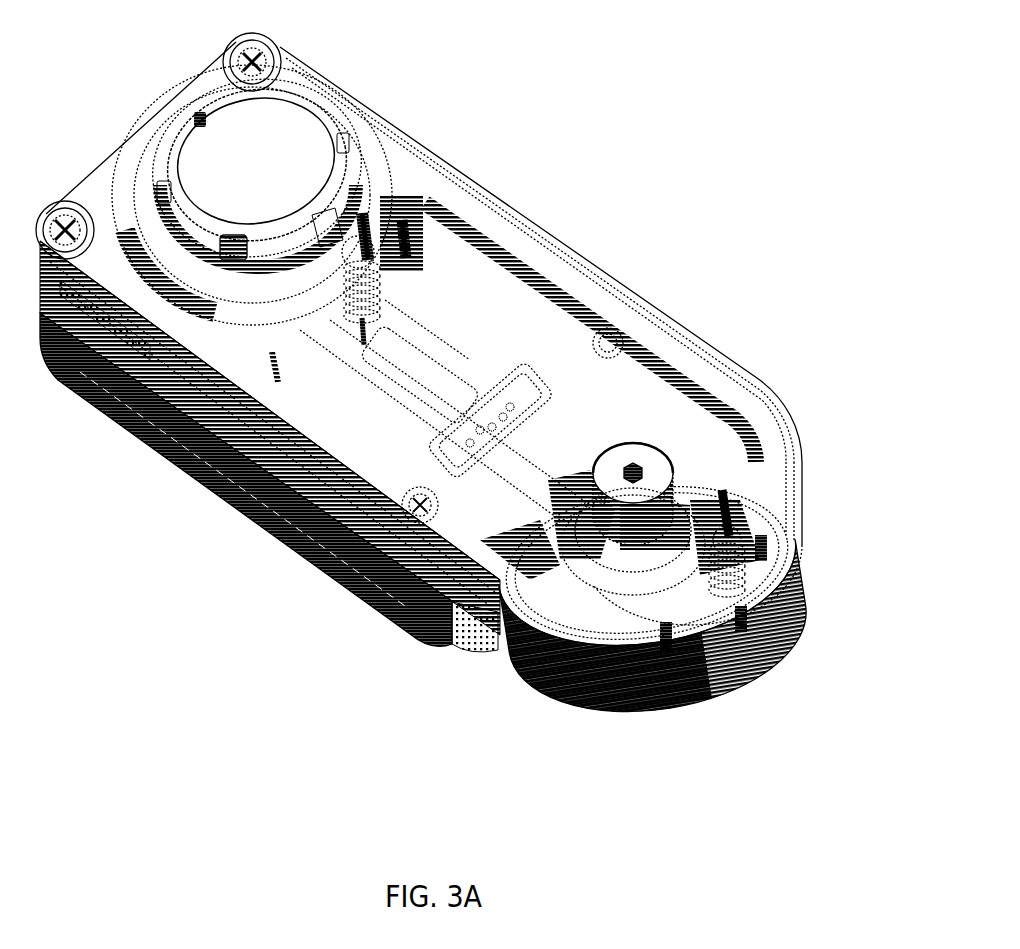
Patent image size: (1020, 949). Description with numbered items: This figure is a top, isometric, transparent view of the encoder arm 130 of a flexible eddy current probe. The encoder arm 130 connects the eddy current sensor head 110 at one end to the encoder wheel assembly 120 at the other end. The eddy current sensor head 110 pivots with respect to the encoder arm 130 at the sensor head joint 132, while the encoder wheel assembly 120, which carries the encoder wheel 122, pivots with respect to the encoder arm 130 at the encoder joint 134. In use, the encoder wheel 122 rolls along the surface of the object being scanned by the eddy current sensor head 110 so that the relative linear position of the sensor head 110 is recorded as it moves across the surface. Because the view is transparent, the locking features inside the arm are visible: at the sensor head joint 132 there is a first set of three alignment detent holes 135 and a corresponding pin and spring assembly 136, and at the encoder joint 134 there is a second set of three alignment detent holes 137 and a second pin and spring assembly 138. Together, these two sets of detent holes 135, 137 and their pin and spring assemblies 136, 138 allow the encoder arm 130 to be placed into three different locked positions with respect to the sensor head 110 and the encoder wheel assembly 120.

The eddy current sensor head 110 is at (400, 637).
The encoder wheel assembly 120 is at (540, 680).
The encoder wheel 122 is at (497, 645).
The encoder arm 130 is at (517, 207).
The sensor head joint 132 is at (215, 163).
The encoder joint 134 is at (653, 450).
The first set of alignment detent holes 135 is at (402, 223).
The pin and spring assembly 136 is at (362, 217).
The second set of alignment detent holes 137 is at (762, 543).
The second pin and spring assembly 138 is at (740, 537).